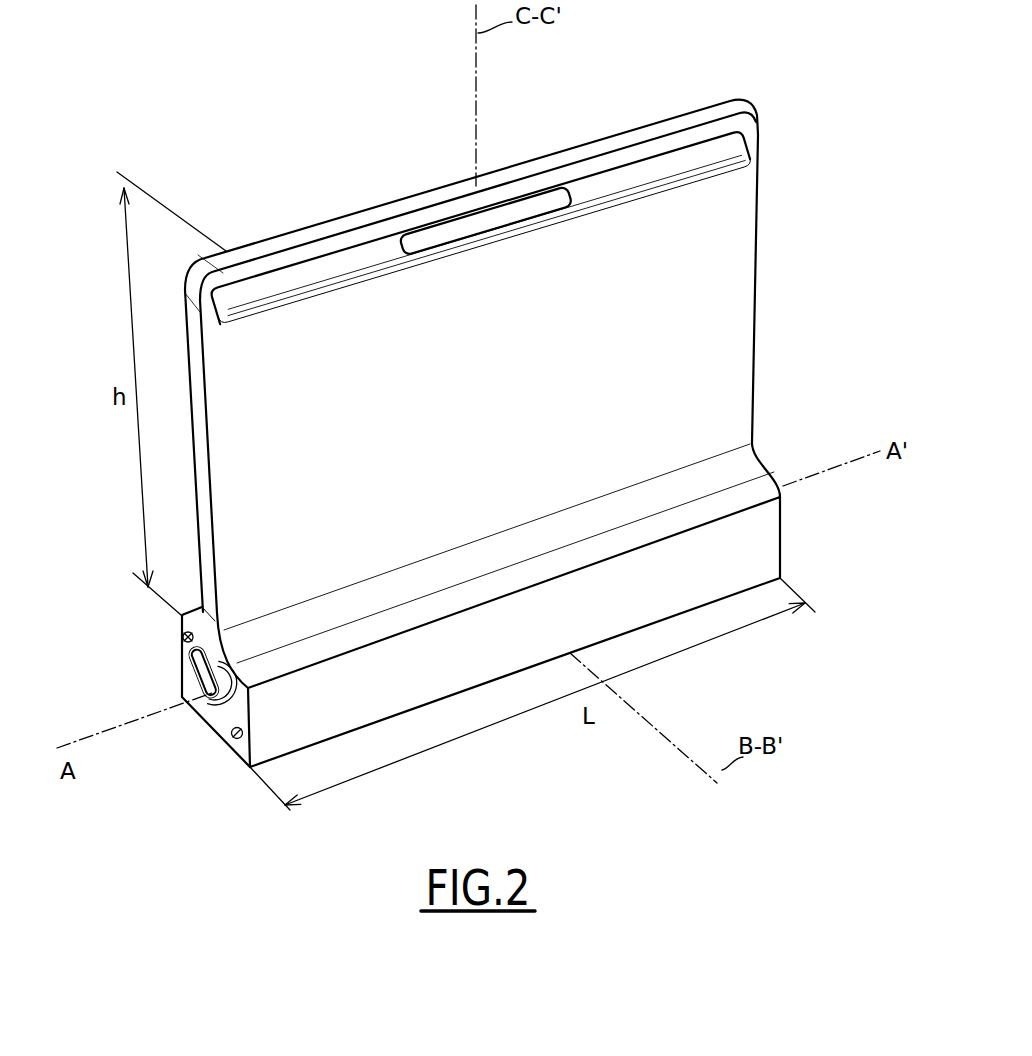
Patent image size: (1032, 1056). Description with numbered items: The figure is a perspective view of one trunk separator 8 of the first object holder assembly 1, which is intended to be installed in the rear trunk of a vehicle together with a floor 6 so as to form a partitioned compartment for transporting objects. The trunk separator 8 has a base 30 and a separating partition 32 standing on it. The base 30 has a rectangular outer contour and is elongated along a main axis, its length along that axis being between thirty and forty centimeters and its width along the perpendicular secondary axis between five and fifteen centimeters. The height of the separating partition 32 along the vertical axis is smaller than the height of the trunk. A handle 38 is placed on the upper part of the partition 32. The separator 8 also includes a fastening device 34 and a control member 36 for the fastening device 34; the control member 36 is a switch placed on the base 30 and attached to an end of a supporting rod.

The first object holder assembly 1 is at (146, 136).
The floor 6 is at (811, 452).
The trunk separator 8 is at (790, 300).
The base 30 is at (808, 498).
The separating partition 32 is at (746, 231).
The fastening device 34 is at (158, 668).
The control member 36 is at (215, 703).
The handle 38 is at (440, 234).